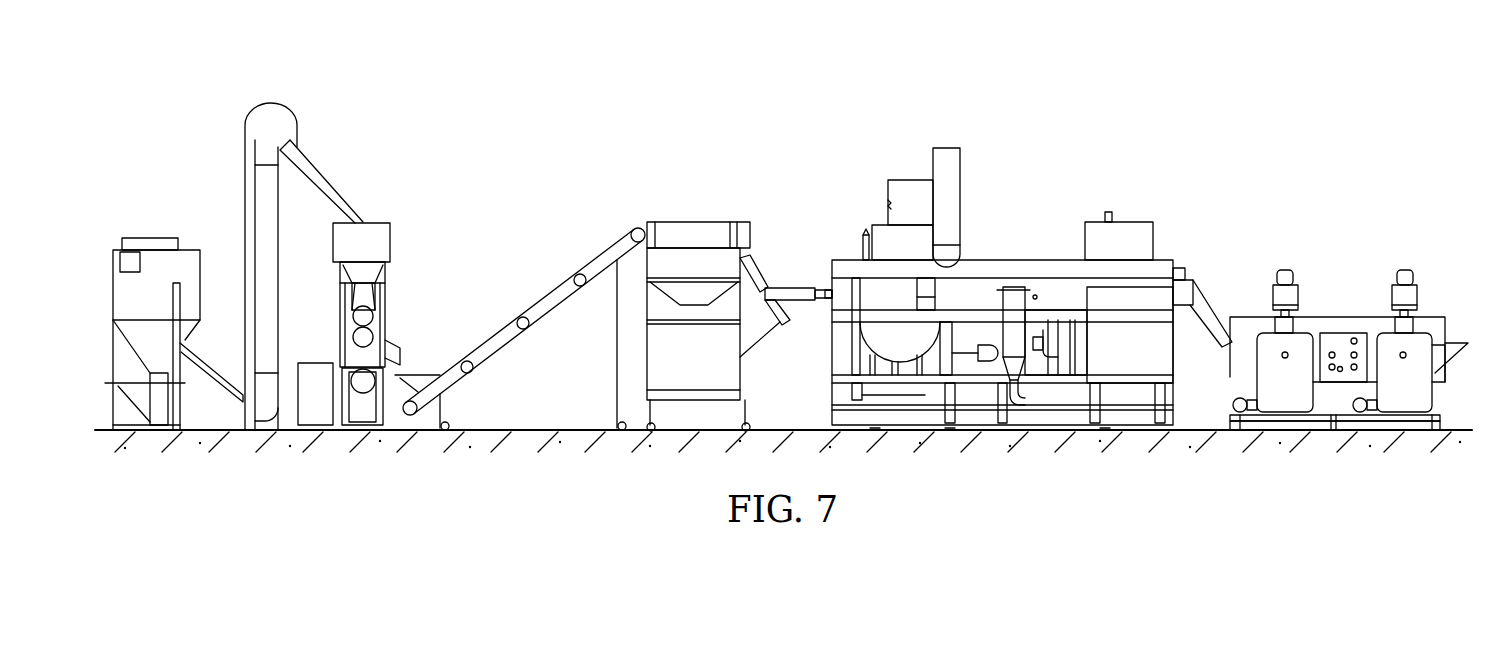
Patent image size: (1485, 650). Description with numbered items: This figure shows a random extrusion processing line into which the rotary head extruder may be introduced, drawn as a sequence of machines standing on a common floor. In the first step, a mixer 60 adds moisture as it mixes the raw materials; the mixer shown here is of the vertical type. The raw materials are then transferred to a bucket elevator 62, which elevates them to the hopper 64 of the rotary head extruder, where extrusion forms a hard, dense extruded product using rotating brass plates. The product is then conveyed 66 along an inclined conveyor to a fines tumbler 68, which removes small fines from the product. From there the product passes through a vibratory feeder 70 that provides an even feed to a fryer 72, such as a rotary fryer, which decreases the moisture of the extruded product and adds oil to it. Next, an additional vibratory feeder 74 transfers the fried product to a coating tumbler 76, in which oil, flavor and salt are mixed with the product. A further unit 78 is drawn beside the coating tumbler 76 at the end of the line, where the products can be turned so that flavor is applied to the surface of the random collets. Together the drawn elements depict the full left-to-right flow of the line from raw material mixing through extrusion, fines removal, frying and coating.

The mixer 60 is at (150, 238).
The bucket elevator 62 is at (268, 107).
The hopper 64 is at (375, 223).
The conveyor 66 is at (553, 290).
The fines tumbler 68 is at (694, 222).
The vibratory feeder 70 is at (792, 290).
The fryer 72 is at (912, 180).
The vibratory feeder 74 is at (1210, 305).
The coating tumbler 76 is at (1283, 268).
The pump unit 78 is at (1403, 268).